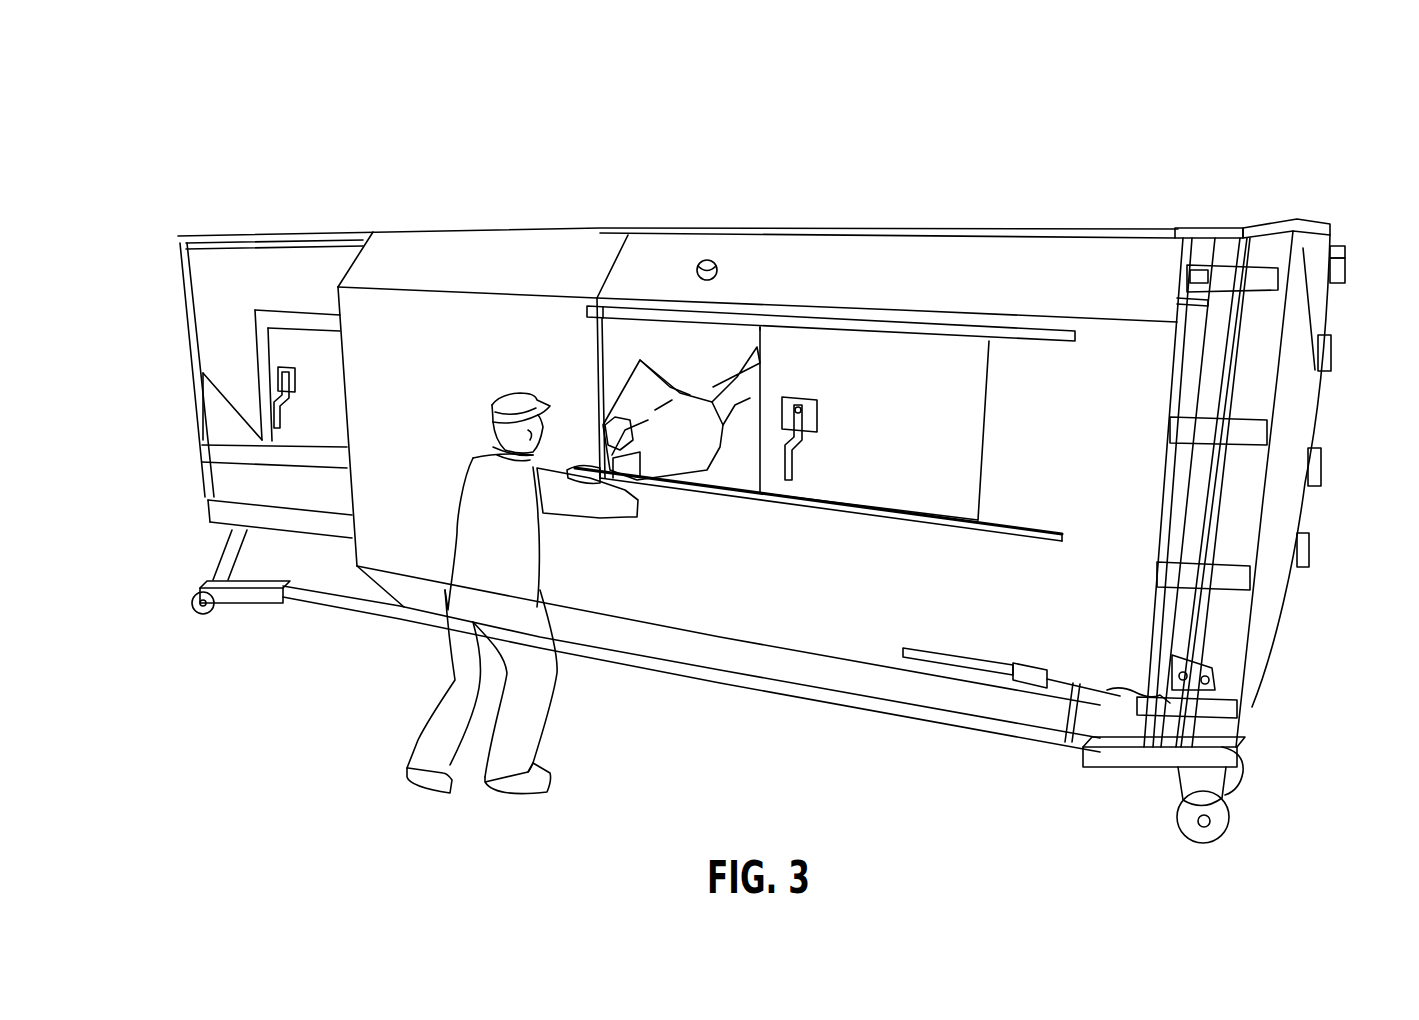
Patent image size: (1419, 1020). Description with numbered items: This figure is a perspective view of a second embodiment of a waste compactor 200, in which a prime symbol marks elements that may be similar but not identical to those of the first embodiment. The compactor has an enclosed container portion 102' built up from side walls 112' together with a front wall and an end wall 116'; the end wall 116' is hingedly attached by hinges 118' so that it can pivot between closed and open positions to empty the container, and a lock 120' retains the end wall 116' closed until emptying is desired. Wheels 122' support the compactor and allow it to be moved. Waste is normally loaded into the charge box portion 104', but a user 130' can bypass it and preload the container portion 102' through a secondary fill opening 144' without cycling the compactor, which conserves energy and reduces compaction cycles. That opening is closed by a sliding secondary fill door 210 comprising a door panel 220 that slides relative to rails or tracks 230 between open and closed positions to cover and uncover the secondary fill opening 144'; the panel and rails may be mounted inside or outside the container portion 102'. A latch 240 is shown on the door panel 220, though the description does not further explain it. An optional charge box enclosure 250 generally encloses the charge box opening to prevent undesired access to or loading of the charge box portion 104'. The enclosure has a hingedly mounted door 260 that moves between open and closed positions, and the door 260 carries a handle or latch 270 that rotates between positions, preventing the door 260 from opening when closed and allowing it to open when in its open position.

The waste compactor 200 is at (1122, 185).
The container portion 102' is at (678, 425).
The charge box portion 104' is at (654, 626).
The side wall 112' is at (869, 327).
The end wall 116' is at (1270, 489).
The hinges 118' is at (1346, 507).
The lock 120' is at (1036, 763).
The wheels 122' is at (740, 722).
The user 130' is at (527, 593).
The secondary fill opening 144' is at (681, 311).
The sliding secondary fill door 210 is at (787, 306).
The door panel 220 is at (867, 382).
The rails or tracks 230 is at (1027, 333).
The latch 240 is at (790, 477).
The charge box enclosure 250 is at (321, 204).
The door 260 is at (302, 357).
The handle or latch 270 is at (277, 422).